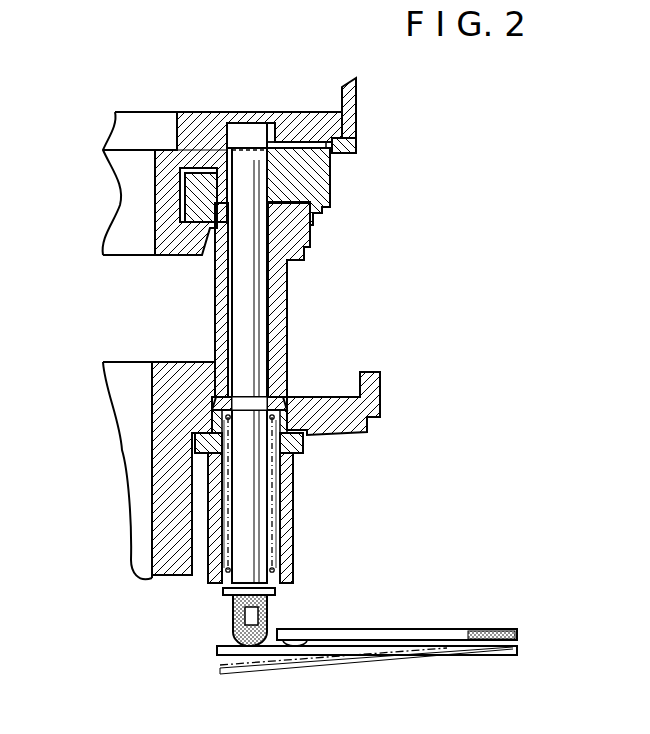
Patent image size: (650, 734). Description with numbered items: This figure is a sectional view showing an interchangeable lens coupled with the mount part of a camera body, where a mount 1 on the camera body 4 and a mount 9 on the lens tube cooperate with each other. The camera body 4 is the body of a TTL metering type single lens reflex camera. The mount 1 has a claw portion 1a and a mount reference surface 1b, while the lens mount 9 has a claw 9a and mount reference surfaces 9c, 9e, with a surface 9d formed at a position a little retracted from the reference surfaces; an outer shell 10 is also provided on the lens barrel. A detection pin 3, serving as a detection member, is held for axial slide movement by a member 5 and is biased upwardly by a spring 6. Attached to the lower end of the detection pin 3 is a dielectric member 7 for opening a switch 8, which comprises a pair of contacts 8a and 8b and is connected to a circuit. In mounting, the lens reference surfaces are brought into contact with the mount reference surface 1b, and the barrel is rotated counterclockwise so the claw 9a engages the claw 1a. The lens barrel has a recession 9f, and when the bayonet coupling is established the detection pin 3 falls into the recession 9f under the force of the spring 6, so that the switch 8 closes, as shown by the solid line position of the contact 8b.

The mount 1 is at (322, 188).
The claw portion 1a is at (207, 195).
The mount reference surface 1b is at (292, 145).
The detection pin 3 is at (243, 125).
The camera body 4 is at (298, 253).
The member 5 is at (293, 486).
The spring 6 is at (273, 545).
The dielectric member 7 is at (233, 616).
The switch 8 is at (365, 627).
The contact 8a is at (442, 632).
The contact 8b is at (328, 650).
The mount 9 is at (200, 131).
The claw 9a is at (168, 240).
The mount reference surface 9c is at (218, 116).
The surface 9d is at (310, 135).
The mount reference surface 9e is at (347, 125).
The recession 9f is at (272, 128).
The outer shell 10 is at (355, 146).